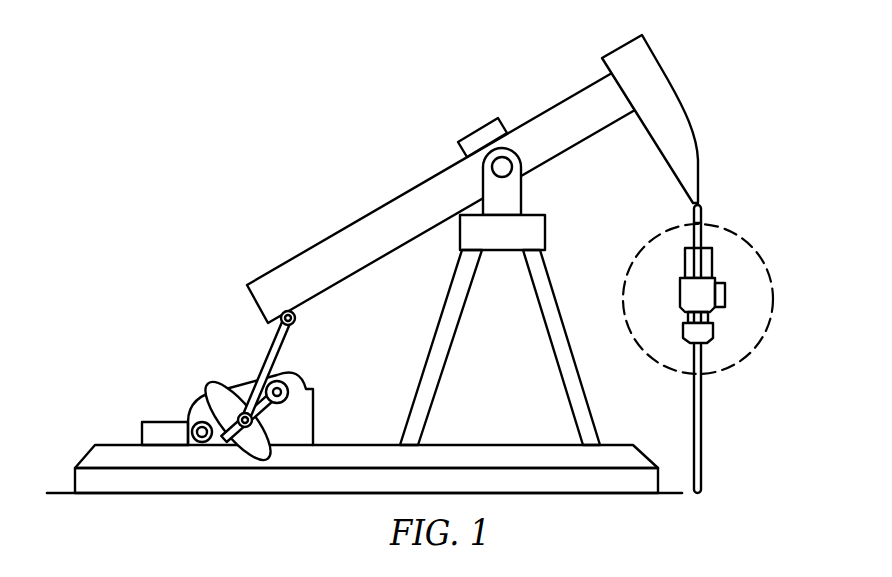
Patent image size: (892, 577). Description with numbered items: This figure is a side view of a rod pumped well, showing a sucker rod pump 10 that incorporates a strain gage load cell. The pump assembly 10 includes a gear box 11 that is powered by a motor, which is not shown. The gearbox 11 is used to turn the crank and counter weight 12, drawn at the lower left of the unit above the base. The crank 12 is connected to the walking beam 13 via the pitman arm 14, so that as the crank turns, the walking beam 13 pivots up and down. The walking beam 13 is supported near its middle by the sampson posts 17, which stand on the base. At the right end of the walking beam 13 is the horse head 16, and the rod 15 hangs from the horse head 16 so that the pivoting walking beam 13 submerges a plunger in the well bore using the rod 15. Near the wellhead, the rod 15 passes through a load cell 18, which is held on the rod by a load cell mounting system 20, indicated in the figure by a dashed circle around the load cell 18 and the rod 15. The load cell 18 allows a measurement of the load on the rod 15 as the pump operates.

The sucker rod pump 10 is at (285, 196).
The gear box 11 is at (338, 372).
The crank and counter weight 12 is at (213, 390).
The walking beam 13 is at (400, 197).
The pitman arm 14 is at (272, 352).
The rod 15 is at (703, 233).
The horse head 16 is at (660, 87).
The sampson posts 17 is at (548, 342).
The load cell 18 is at (678, 272).
The load cell mounting system 20 is at (770, 271).